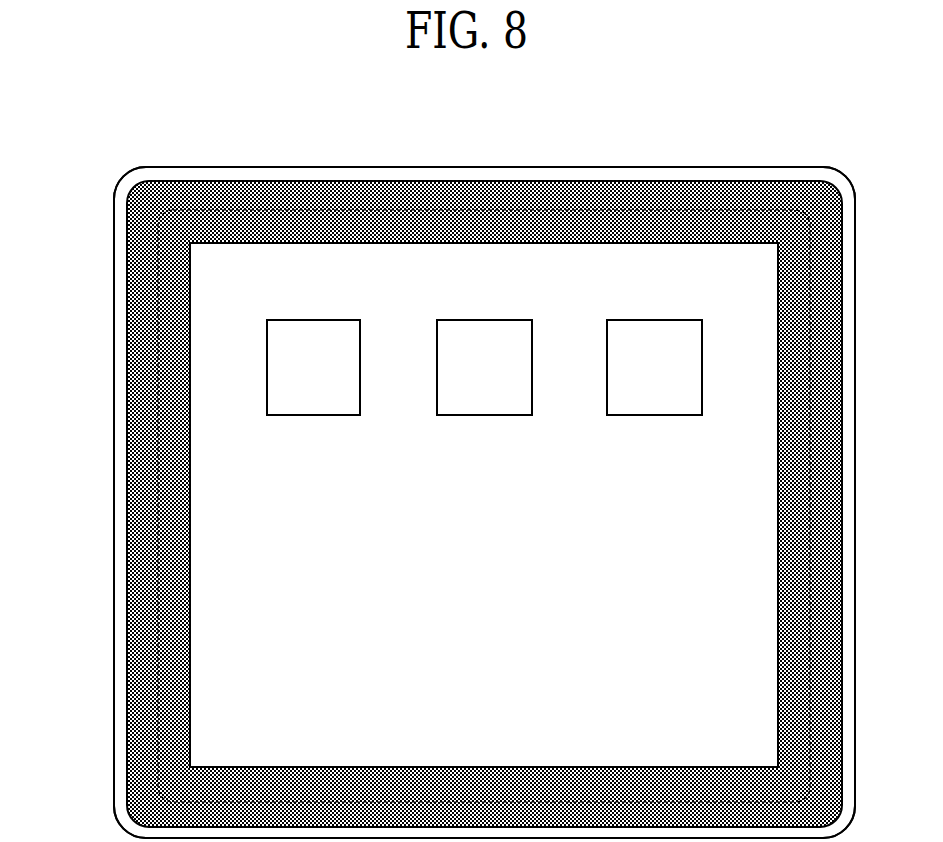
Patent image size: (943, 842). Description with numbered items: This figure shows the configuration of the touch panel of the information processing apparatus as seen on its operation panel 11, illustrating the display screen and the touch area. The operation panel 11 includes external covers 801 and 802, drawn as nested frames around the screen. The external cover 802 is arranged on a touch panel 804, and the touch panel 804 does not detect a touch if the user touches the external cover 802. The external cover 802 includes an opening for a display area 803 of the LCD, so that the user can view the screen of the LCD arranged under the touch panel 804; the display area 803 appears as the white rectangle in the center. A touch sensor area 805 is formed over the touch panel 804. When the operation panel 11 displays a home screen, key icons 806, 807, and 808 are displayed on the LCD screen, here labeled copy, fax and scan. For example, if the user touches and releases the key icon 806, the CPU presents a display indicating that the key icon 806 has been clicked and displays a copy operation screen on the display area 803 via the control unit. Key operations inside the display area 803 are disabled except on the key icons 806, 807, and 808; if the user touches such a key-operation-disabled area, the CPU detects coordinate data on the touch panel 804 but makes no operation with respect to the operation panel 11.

The operation panel 11 is at (245, 167).
The external cover 801 is at (114, 288).
The external cover 802 is at (127, 350).
The display area 803 is at (215, 410).
The touch panel 804 is at (157, 480).
The touch sensor area 805 is at (190, 567).
The key icon 806 is at (316, 320).
The key icon 807 is at (487, 320).
The key icon 808 is at (655, 320).